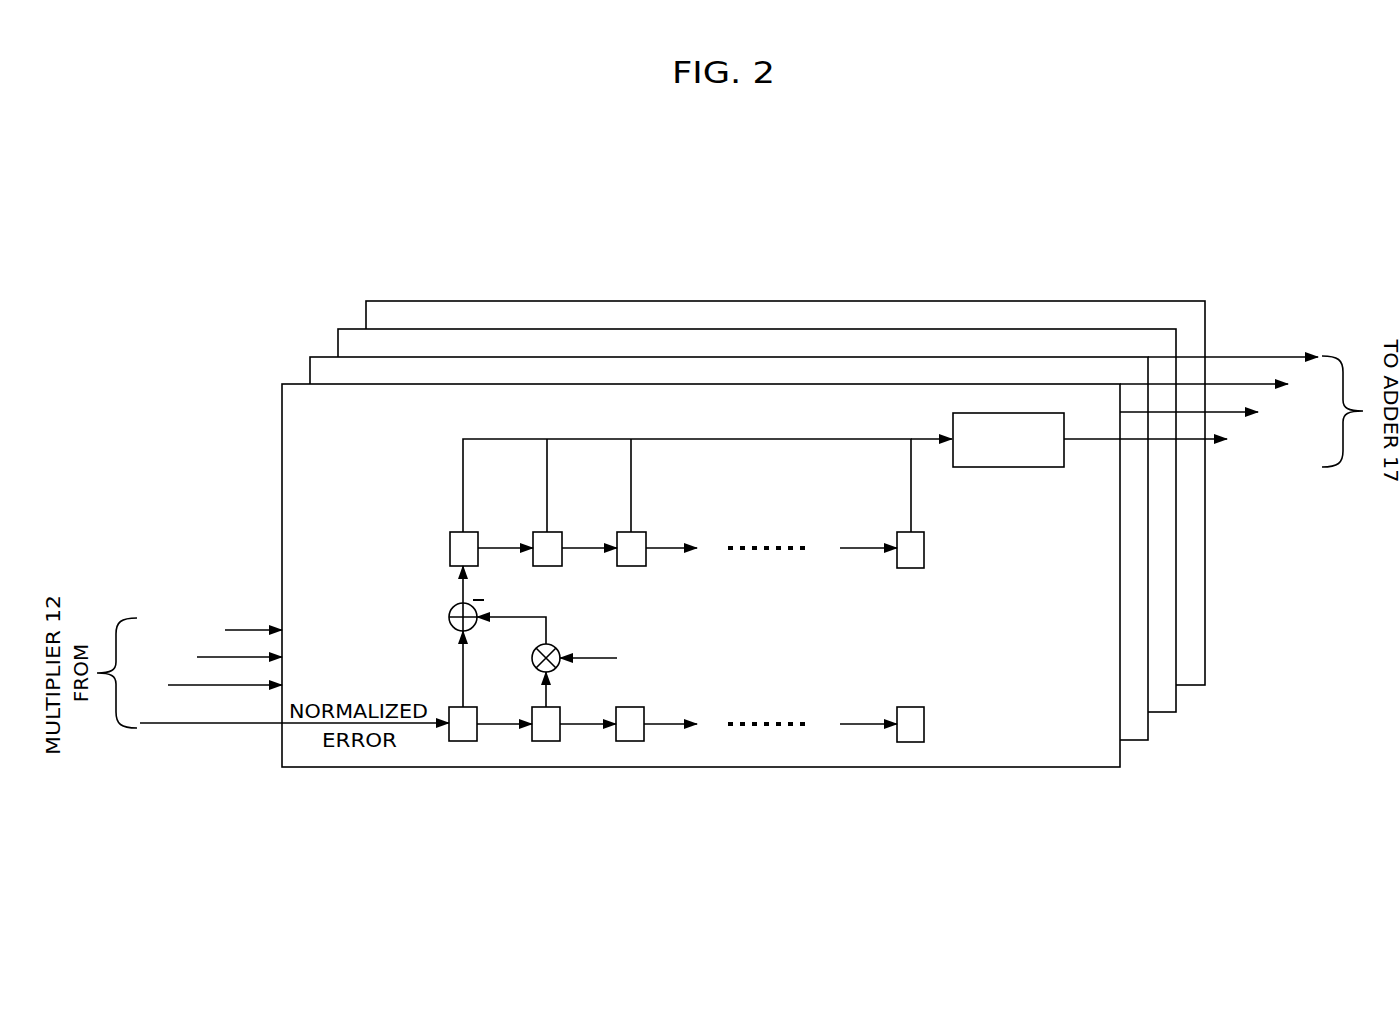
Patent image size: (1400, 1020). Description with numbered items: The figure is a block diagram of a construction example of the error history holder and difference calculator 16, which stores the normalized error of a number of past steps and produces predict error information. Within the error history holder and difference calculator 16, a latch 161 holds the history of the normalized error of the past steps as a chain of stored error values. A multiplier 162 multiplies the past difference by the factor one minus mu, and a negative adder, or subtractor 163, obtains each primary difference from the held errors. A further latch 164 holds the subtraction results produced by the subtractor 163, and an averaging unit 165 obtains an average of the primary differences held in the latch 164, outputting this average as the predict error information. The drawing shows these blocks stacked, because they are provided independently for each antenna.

The error history holder and difference calculator 16 is at (820, 384).
The latch 161 is at (465, 741).
The multiplier 162 is at (555, 645).
The negative adder (subtractor) 163 is at (453, 614).
The latch 164 is at (450, 540).
The averaging unit 165 is at (1008, 467).